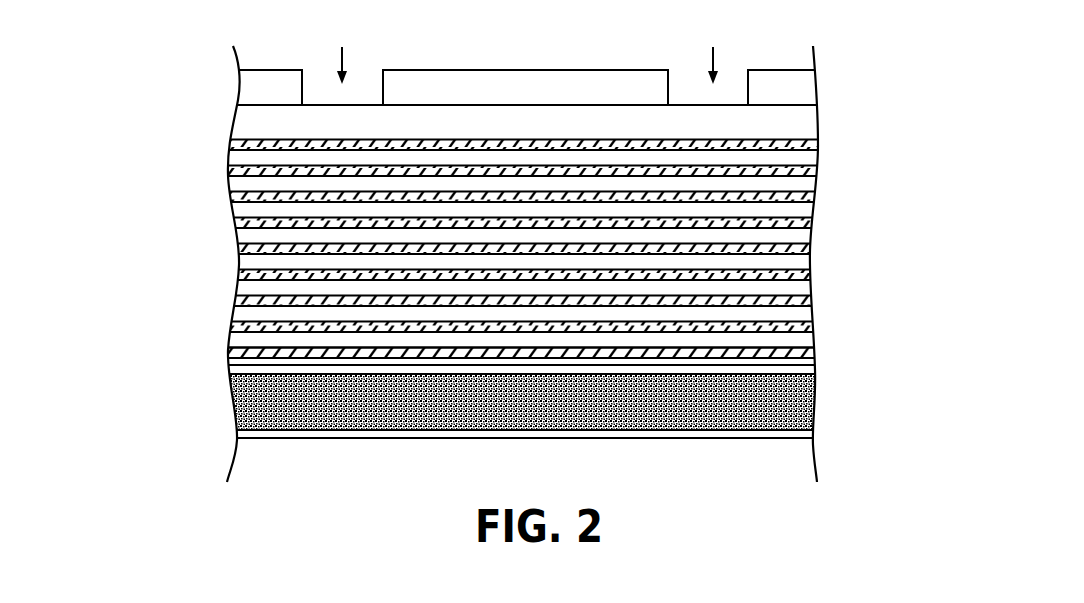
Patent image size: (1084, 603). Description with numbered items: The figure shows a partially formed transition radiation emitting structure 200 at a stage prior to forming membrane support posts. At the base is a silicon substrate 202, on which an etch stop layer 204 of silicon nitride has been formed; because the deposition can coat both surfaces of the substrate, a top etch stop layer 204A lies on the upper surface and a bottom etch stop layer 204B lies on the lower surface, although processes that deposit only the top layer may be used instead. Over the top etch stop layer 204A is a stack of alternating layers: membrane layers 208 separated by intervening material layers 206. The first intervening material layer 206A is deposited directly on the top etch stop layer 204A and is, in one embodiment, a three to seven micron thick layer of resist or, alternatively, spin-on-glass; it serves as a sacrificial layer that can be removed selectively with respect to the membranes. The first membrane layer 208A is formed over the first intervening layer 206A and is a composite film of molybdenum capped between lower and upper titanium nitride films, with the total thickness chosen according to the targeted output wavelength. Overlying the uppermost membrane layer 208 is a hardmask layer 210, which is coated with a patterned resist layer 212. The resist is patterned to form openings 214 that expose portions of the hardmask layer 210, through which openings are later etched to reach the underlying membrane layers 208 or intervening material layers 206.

The semiconductor device structure 200 is at (166, 112).
The silicon substrate 202 is at (516, 416).
The etch stop layer 204 is at (233, 371).
The top etch stop layer 204A is at (812, 370).
The bottom etch stop layer 204B is at (812, 433).
The intervening material layers 206 is at (806, 357).
The first intervening material layer 206A is at (812, 360).
The membrane layers 208 is at (238, 346).
The first membrane layer 208A is at (228, 347).
The hardmask layer 210 is at (515, 136).
The patterned resist layer 212 is at (802, 87).
The openings 214 is at (527, 50).